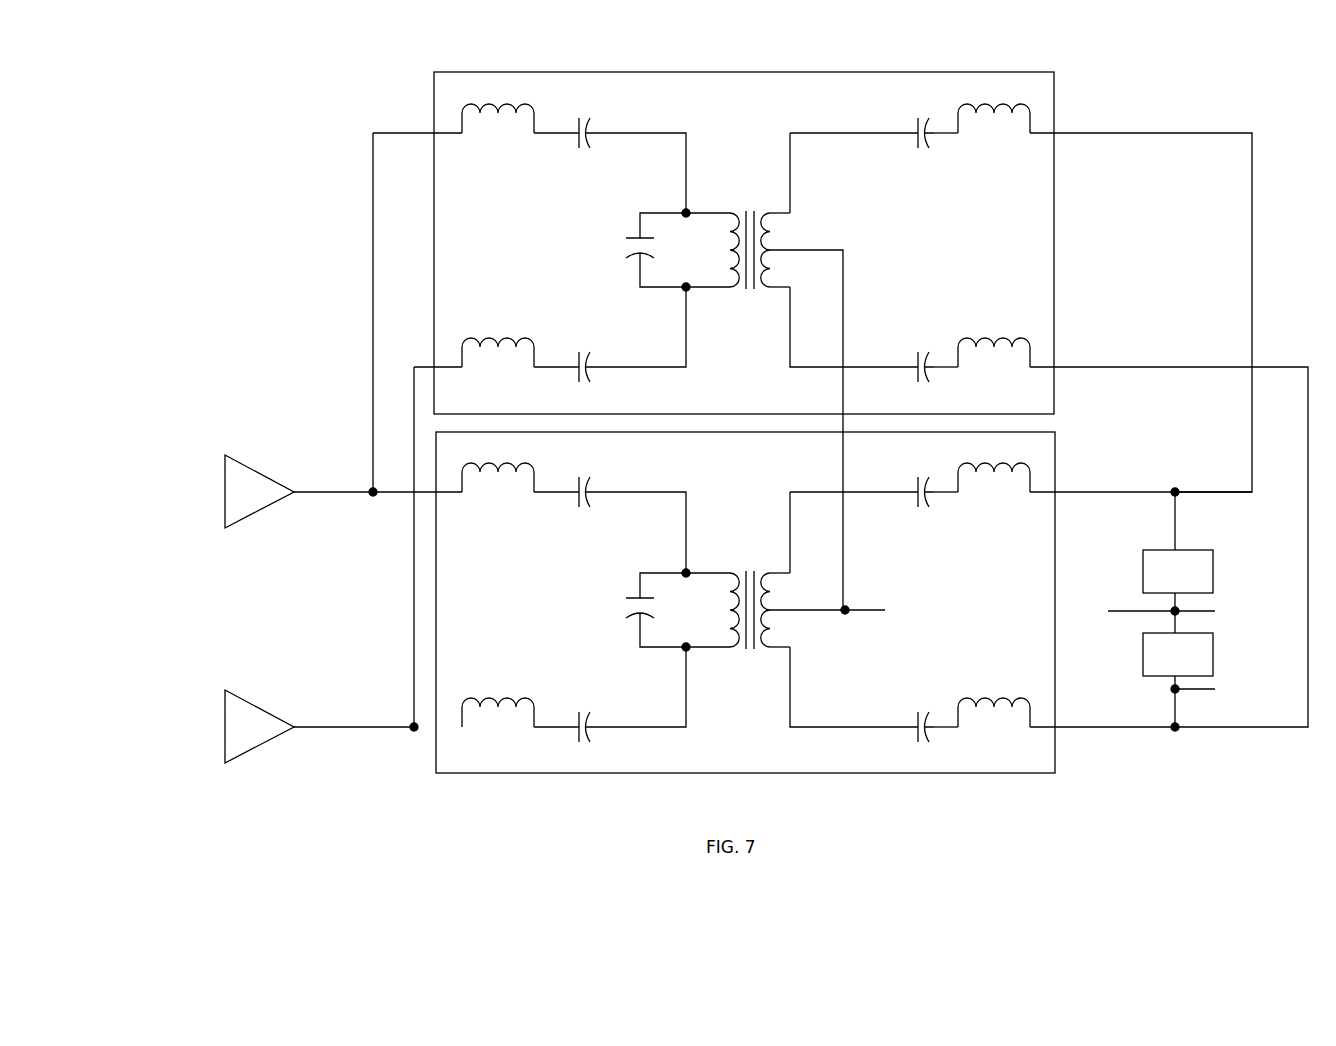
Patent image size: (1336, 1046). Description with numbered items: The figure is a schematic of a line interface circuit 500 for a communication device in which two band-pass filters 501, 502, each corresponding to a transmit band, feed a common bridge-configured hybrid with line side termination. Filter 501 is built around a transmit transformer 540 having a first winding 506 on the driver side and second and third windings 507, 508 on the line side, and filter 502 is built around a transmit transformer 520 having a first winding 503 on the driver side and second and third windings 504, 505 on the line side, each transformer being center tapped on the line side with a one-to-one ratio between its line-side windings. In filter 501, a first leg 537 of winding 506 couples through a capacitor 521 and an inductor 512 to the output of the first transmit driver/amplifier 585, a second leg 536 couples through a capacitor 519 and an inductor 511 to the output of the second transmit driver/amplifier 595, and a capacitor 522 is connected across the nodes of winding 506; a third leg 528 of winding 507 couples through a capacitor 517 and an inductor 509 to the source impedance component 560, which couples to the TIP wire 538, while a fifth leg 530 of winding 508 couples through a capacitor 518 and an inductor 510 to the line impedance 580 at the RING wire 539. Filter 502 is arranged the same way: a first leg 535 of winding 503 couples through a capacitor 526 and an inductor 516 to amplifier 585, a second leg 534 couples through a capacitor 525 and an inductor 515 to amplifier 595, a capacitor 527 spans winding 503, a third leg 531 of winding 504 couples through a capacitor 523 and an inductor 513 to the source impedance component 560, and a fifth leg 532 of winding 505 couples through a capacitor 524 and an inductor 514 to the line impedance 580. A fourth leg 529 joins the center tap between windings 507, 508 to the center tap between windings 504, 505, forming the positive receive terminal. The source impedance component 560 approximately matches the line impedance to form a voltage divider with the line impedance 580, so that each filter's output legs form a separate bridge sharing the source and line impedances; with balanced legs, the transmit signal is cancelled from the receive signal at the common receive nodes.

The line interface circuit 500 is at (173, 700).
The filter 501 is at (1056, 79).
The filter 502 is at (1056, 439).
The first winding 503 is at (712, 610).
The second winding 504 is at (786, 610).
The third winding 505 is at (790, 634).
The first winding 506 is at (712, 250).
The second winding 507 is at (786, 250).
The third winding 508 is at (790, 274).
The third inductor 509 is at (994, 106).
The fourth inductor 510 is at (994, 359).
The second inductor 511 is at (498, 362).
The first inductor 512 is at (498, 107).
The third inductor 513 is at (994, 465).
The fourth inductor 514 is at (994, 719).
The second inductor 515 is at (498, 723).
The first inductor 516 is at (498, 465).
The fourth capacitor 517 is at (921, 119).
The fifth capacitor 518 is at (919, 381).
The third capacitor 519 is at (584, 381).
The transmit transformer 520 is at (748, 585).
The first capacitor 521 is at (584, 121).
The second capacitor 522 is at (634, 250).
The fourth capacitor 523 is at (921, 480).
The fifth capacitor 524 is at (921, 742).
The third capacitor 525 is at (586, 741).
The first capacitor 526 is at (586, 480).
The second capacitor 527 is at (635, 610).
The third leg 528 is at (849, 162).
The fourth leg 529 is at (829, 430).
The fifth leg 530 is at (850, 339).
The third leg 531 is at (848, 522).
The fifth leg 532 is at (850, 700).
The second leg 534 is at (640, 698).
The first leg 535 is at (640, 523).
The second leg 536 is at (640, 339).
The first leg 537 is at (640, 163).
The TIP wire 538 is at (1176, 613).
The RING wire 539 is at (1237, 701).
The transmit transformer 540 is at (748, 225).
The impedance component Zsrc 560 is at (1196, 542).
The line impedance Zline 580 is at (1196, 654).
The first transmit driver/amplifier 585 is at (299, 488).
The second transmit driver/amplifier 595 is at (319, 721).